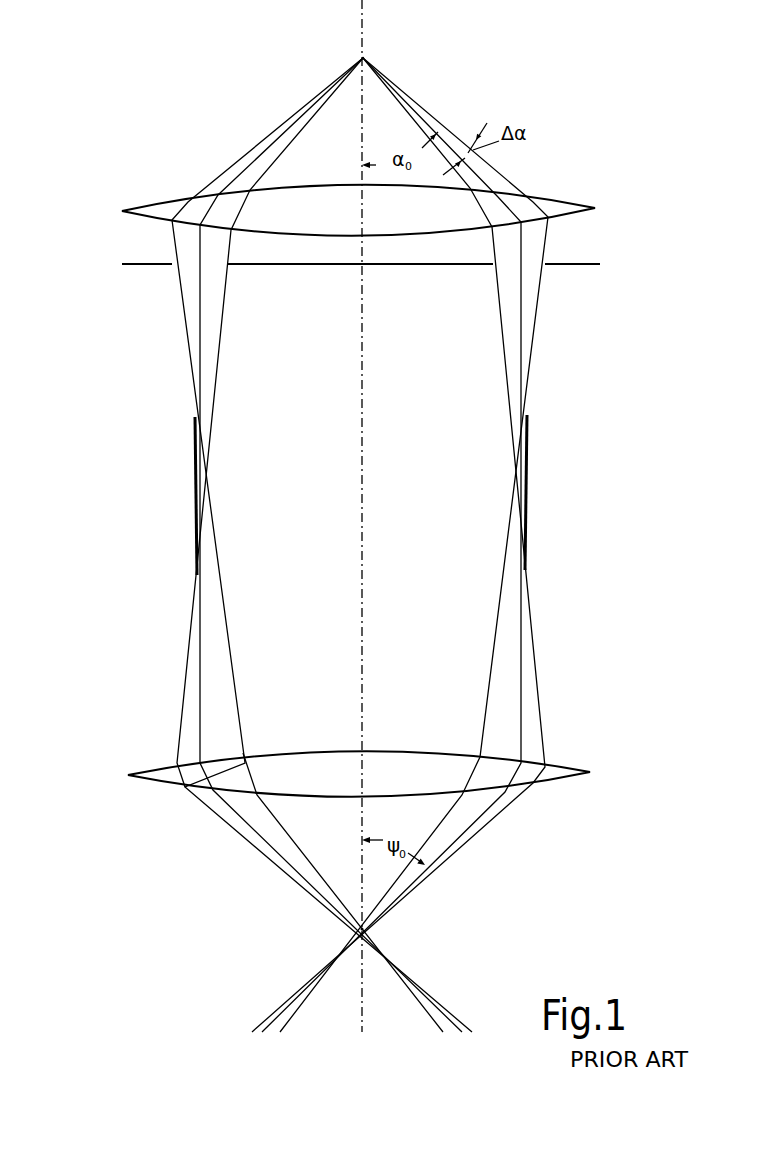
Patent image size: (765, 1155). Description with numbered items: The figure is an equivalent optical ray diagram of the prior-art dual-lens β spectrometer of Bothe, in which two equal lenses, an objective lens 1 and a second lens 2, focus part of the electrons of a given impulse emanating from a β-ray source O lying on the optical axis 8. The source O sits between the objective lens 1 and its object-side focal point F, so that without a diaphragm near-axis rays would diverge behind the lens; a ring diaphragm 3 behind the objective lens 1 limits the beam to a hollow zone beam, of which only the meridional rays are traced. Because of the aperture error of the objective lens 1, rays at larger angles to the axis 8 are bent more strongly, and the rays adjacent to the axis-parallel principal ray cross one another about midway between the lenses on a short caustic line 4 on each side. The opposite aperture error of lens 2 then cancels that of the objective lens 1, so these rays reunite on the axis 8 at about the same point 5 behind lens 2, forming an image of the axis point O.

The objective lens 1 is at (557, 207).
The second lens 2 is at (557, 770).
The ring diaphragm 3 is at (587, 263).
The caustic line 4 is at (198, 470).
The image point 5 is at (373, 930).
The optical axis 8 is at (361, 536).
The β-ray source O is at (360, 56).
The focal point F is at (369, 14).